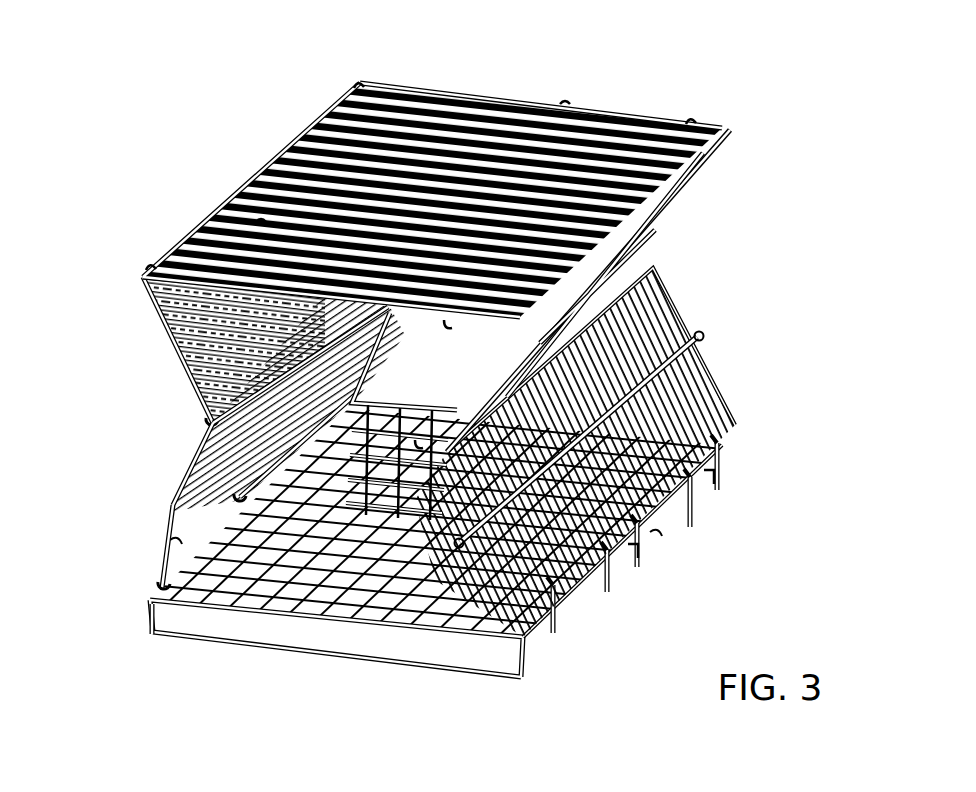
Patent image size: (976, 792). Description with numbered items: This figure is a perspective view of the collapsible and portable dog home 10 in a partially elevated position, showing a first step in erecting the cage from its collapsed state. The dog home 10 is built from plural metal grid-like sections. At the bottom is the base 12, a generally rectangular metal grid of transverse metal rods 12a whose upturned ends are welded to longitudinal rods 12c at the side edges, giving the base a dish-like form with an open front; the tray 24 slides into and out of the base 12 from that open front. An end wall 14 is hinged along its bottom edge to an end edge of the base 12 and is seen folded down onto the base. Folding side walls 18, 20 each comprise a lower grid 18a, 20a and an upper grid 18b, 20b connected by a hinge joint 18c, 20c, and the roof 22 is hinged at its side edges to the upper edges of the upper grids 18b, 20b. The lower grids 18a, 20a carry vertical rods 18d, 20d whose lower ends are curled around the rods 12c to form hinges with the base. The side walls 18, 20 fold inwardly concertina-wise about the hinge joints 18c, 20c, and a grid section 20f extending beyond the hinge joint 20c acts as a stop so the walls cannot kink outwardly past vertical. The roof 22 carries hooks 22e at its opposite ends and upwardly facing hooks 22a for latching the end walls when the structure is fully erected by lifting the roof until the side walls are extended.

The dog home 10 is at (243, 165).
The base 12 is at (362, 655).
The transverse metal rods 12a is at (150, 618).
The longitudinal rods 12c is at (180, 545).
The end wall 14 is at (280, 582).
The tray 24 is at (320, 634).
The side wall 18 is at (185, 390).
The lower grid 18a is at (200, 522).
The upper grid 18b is at (150, 330).
The hinge joint 18c is at (203, 416).
The vertical rods 18d is at (240, 498).
The side wall 20 is at (712, 330).
The lower grid 20a is at (722, 396).
The upper grid 20b is at (680, 216).
The hinge joint 20c is at (632, 306).
The vertical rods 20d is at (715, 484).
The grid section 20f is at (420, 432).
The roof 22 is at (510, 125).
The upwardly facing hooks 22a is at (566, 106).
The hooks 22e is at (360, 84).